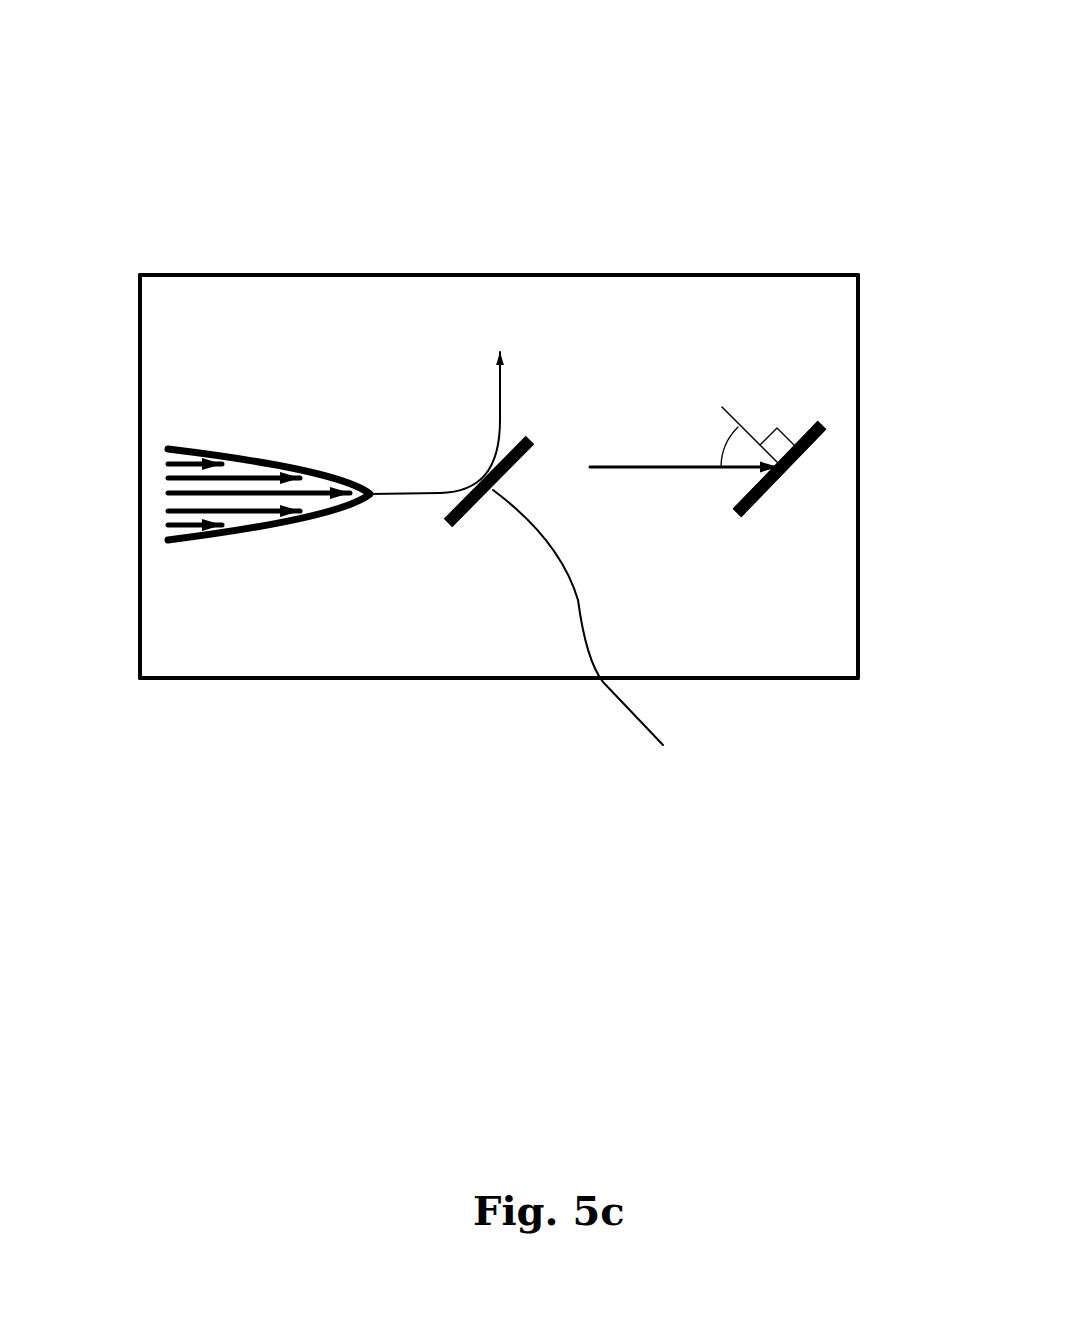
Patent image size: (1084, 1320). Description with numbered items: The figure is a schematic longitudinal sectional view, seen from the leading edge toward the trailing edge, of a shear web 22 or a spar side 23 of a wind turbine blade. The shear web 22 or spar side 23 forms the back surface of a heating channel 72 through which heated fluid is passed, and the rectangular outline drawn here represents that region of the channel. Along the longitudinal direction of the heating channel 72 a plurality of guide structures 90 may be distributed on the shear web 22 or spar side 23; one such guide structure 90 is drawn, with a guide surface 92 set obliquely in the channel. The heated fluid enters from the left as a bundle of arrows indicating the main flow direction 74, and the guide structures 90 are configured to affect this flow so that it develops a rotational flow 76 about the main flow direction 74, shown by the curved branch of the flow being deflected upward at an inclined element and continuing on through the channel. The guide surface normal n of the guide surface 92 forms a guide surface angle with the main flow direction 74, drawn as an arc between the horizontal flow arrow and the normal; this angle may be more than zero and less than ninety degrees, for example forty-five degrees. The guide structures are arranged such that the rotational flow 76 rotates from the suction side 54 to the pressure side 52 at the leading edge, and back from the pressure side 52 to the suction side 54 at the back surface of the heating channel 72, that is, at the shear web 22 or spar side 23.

The shear web 22 is at (499, 340).
The spar side 23 is at (578, 150).
The pressure side 52 is at (286, 708).
The suction side 54 is at (238, 245).
The heating channel 72 is at (502, 592).
The main flow direction 74 is at (640, 447).
The rotational flow 76 is at (500, 418).
The guide structure 90 is at (780, 483).
The guide surface 92 is at (798, 445).
The guide surface normal n is at (742, 425).